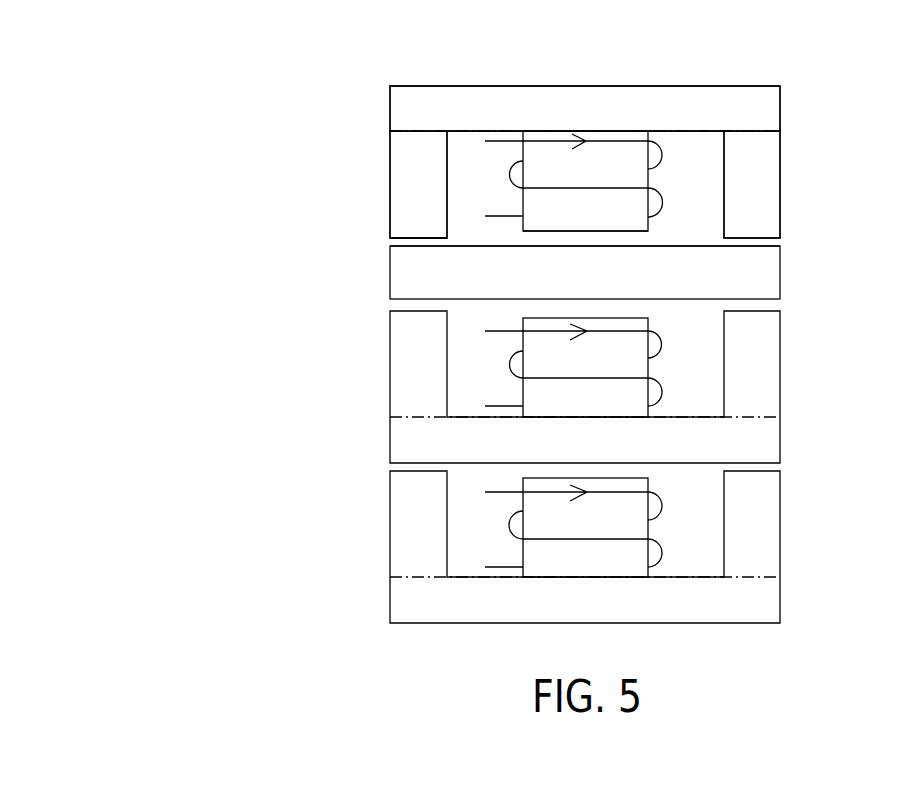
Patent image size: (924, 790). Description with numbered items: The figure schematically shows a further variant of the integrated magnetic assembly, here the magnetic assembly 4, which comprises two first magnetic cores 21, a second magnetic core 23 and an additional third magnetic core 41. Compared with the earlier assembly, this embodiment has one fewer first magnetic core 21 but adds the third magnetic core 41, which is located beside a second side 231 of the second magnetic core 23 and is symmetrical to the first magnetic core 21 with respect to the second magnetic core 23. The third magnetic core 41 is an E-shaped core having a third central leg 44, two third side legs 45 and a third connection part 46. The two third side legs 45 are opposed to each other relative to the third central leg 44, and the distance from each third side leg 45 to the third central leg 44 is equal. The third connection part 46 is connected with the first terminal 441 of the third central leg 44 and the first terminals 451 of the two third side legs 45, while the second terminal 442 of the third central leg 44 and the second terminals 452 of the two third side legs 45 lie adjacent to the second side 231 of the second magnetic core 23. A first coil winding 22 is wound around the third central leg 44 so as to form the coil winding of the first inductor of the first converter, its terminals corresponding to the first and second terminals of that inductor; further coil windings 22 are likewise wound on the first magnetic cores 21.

The magnetic assembly 4 is at (146, 112).
The first magnetic core 21 is at (345, 525).
The coil winding 22 is at (688, 181).
The second magnetic core 23 is at (366, 262).
The second side 231 is at (453, 247).
The third magnetic core 41 is at (349, 212).
The third central leg 44 is at (563, 170).
The first terminal of the third central leg 441 is at (600, 139).
The second terminal of the third central leg 442 is at (585, 231).
The third side leg 45 is at (758, 232).
The first terminal of the third side leg 451 is at (425, 131).
The second terminal of the third side leg 452 is at (418, 237).
The third connection part 46 is at (723, 106).